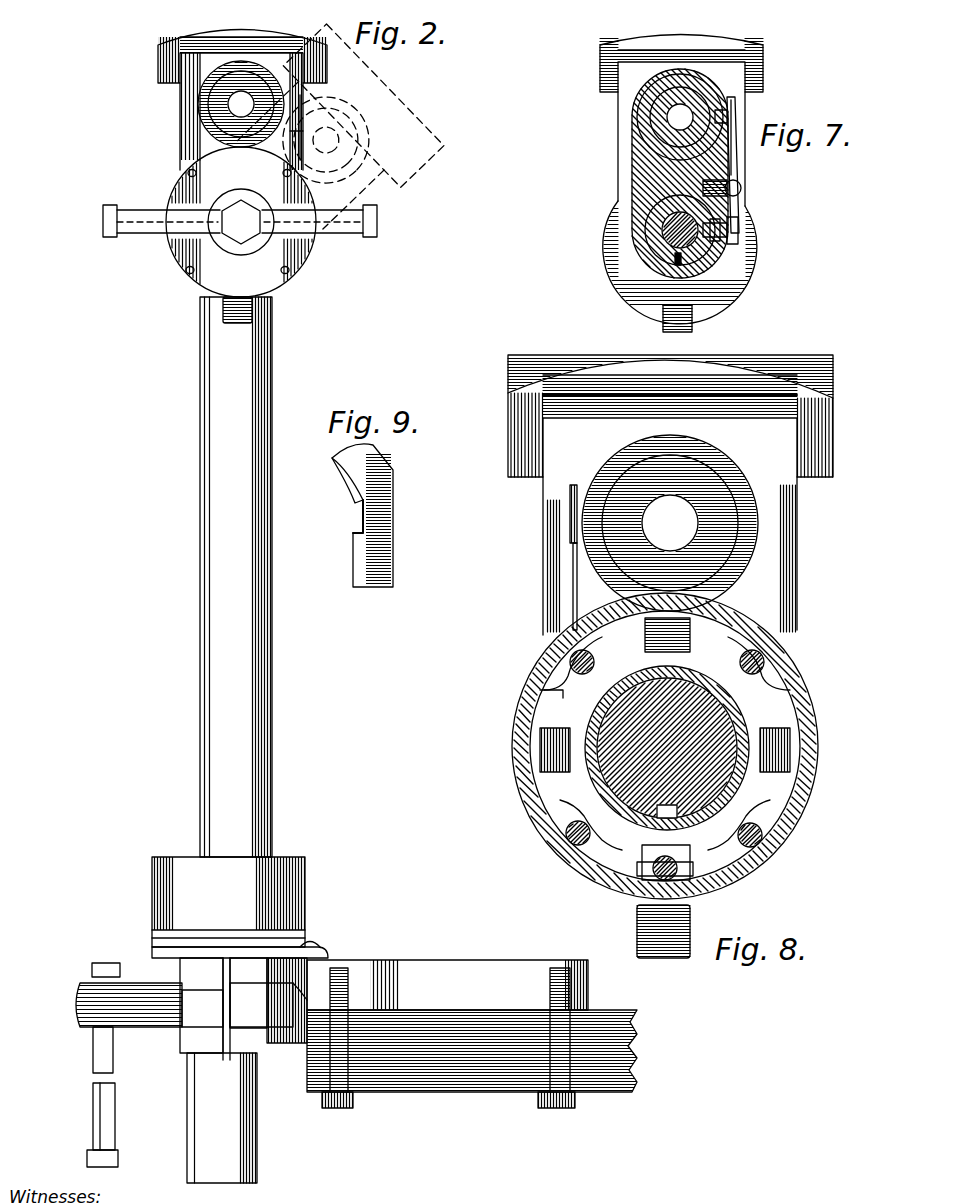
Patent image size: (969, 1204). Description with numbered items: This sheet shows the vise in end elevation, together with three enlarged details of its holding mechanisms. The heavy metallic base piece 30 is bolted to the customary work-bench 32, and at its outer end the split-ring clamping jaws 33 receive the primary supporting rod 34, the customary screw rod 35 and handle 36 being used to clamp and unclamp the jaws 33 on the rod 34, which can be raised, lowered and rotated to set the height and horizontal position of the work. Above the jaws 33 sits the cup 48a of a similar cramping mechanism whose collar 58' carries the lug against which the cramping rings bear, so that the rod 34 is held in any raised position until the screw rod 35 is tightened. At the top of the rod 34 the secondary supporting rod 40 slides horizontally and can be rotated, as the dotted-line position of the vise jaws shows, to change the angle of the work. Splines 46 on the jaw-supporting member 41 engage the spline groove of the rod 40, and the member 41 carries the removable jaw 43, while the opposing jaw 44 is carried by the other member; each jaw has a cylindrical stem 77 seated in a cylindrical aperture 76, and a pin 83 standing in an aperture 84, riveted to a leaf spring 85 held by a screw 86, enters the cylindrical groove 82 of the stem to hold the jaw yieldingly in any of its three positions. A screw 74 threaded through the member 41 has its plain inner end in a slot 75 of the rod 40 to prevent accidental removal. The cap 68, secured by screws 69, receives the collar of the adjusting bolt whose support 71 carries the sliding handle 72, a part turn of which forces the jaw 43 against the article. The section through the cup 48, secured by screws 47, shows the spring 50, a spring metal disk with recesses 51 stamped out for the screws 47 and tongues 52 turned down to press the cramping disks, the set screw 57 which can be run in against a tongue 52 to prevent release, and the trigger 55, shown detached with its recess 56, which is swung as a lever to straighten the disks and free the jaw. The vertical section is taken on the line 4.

In FIG. 2, the section line 4 is at (258, 15).
In FIG. 2, the base piece 30 is at (425, 972).
In FIG. 2, the work-bench 32 is at (462, 1080).
In FIG. 2, the split-ring clamping jaws 33 is at (200, 1060).
In FIG. 2, the primary supporting rod 34 is at (272, 742).
In FIG. 2, the screw rod 35 is at (222, 1005).
In FIG. 2, the handle 36 is at (96, 1050).
In FIG. 8, the secondary supporting rod 40 is at (712, 732).
In FIG. 2, the jaw-supporting member 41 is at (238, 300).
In FIG. 7, the jaw-supporting member 41 is at (675, 240).
In FIG. 2, the jaw 43 is at (292, 40).
In FIG. 7, the jaw 43 is at (757, 36).
In FIG. 8, the jaw 44 is at (822, 365).
In FIG. 7, the splines 46 is at (676, 262).
In FIG. 8, the screws 47 is at (545, 660).
In FIG. 8, the cup 48 is at (818, 740).
In FIG. 2, the cup 48a is at (306, 858).
In FIG. 8, the spring 50 is at (540, 691).
In FIG. 8, the recesses 51 is at (560, 636).
In FIG. 8, the tongues 52 is at (675, 628).
In FIG. 2, the trigger 55 is at (252, 312).
In FIG. 9, the trigger 55 is at (385, 466).
In FIG. 7, the trigger 55 is at (692, 317).
In FIG. 8, the trigger 55 is at (680, 935).
In FIG. 9, the recess 56 is at (393, 510).
In FIG. 8, the set screw 57 is at (655, 880).
In FIG. 2, the collar 58' is at (254, 932).
In FIG. 2, the cap 68 is at (180, 270).
In FIG. 2, the screws 69 is at (283, 174).
In FIG. 2, the support 71 is at (402, 175).
In FIG. 2, the sliding handle 72 is at (134, 212).
In FIG. 7, the screw 74 is at (733, 235).
In FIG. 7, the slot 75 is at (706, 250).
In FIG. 2, the cylindrical aperture 76 is at (208, 107).
In FIG. 2, the cylindrical stems 77 is at (205, 103).
In FIG. 7, the cylindrical groove 82 is at (650, 117).
In FIG. 2, the pin 83 is at (291, 130).
In FIG. 7, the pin 83 is at (727, 117).
In FIG. 8, the pin 83 is at (569, 517).
In FIG. 7, the aperture 84 is at (728, 100).
In FIG. 2, the leaf spring 85 is at (302, 120).
In FIG. 7, the leaf spring 85 is at (731, 157).
In FIG. 8, the leaf spring 85 is at (572, 572).
In FIG. 7, the screw 86 is at (741, 194).